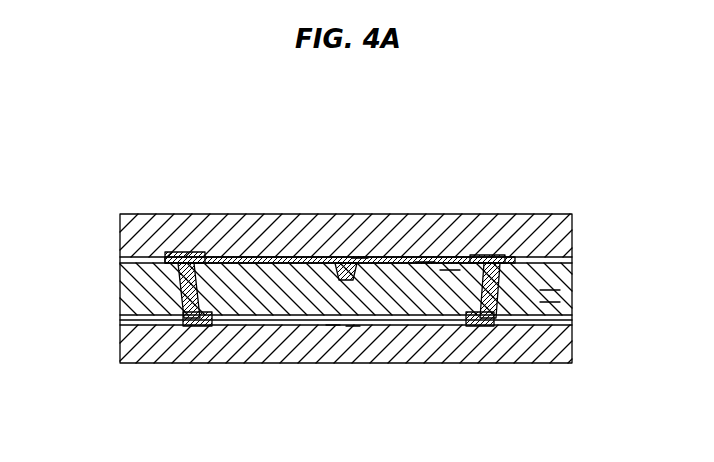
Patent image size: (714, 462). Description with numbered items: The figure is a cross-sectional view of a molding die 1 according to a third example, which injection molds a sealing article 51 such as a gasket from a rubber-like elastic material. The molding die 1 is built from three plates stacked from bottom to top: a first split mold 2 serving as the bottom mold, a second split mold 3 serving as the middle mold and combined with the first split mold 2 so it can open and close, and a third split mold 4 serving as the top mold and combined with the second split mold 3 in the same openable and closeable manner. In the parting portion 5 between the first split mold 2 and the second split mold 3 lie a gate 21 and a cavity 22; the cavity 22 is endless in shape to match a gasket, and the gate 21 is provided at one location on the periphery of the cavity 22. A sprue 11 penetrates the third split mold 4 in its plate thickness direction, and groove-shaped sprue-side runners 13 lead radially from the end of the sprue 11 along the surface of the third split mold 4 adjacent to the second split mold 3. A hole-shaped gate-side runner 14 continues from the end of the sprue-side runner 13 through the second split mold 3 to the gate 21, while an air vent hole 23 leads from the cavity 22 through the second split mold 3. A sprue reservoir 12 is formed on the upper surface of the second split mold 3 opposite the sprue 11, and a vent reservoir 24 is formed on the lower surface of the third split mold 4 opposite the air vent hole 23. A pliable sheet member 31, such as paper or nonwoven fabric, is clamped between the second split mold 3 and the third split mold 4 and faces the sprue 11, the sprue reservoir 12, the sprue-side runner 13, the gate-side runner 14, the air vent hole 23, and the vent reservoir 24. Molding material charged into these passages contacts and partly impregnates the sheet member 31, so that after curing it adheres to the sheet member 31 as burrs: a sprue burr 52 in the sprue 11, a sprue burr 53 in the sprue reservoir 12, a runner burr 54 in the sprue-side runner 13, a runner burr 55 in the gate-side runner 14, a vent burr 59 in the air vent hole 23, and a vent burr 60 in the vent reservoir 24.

The molding die 1 is at (584, 194).
The first split mold 2 is at (121, 364).
The second split mold 3 is at (130, 308).
The third split mold 4 is at (137, 240).
The parting portion 5 is at (124, 338).
The sprue 11 is at (346, 262).
The sprue reservoir 12 is at (333, 328).
The sprue-side runner 13 is at (398, 270).
The gate-side runner 14 is at (548, 292).
The gate 21 is at (493, 338).
The cavity 22 is at (477, 328).
The air vent hole 23 is at (128, 272).
The vent reservoir 24 is at (174, 252).
The sheet member 31 is at (450, 270).
The sealing article 51 is at (202, 326).
The sprue burr 52 is at (358, 258).
The sprue burr 53 is at (354, 328).
The runner burr 54 is at (425, 262).
The runner burr 55 is at (545, 300).
The vent burr 59 is at (128, 298).
The vent burr 60 is at (203, 255).